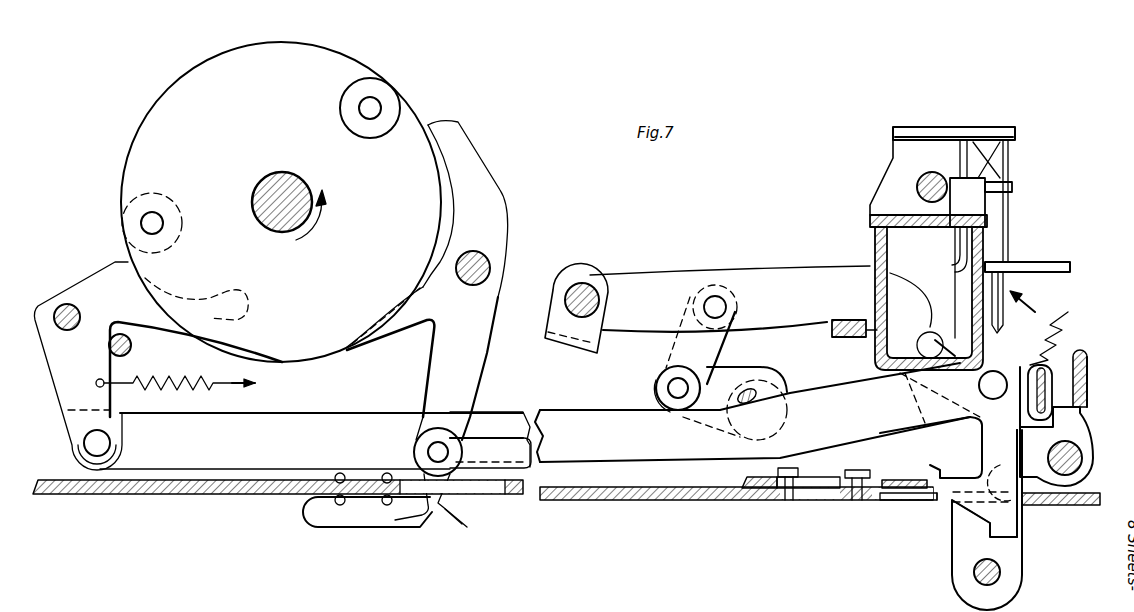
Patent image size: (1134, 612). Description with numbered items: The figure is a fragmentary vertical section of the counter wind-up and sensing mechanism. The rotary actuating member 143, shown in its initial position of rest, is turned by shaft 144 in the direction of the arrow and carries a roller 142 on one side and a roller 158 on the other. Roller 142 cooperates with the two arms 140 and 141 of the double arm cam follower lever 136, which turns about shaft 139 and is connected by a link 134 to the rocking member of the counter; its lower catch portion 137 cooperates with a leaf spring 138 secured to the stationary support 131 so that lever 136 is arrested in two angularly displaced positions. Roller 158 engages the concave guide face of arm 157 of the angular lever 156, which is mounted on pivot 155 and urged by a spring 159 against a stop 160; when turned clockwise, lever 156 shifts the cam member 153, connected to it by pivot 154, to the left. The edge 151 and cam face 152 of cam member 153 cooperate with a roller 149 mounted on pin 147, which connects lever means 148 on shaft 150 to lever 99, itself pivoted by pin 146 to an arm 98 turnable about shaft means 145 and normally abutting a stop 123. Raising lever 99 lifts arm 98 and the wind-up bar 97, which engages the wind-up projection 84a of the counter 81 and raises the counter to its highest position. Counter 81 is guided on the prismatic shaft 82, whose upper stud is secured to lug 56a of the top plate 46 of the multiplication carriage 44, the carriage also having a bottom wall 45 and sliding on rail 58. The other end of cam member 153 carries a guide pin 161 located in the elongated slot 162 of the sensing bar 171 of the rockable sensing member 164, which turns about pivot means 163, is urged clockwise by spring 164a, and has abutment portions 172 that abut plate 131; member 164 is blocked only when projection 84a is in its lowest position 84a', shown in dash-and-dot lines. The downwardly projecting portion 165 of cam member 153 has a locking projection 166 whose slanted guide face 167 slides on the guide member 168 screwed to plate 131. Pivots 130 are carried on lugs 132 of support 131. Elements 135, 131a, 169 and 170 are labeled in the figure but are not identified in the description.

The rotary actuating member 143 is at (182, 105).
The shaft 144 is at (282, 184).
The roller 142 is at (385, 93).
The roller 158 is at (122, 222).
The arm 141 is at (484, 178).
The double arm cam follower lever 136 is at (489, 299).
The shaft 139 is at (490, 265).
The arm 140 is at (387, 328).
The lever lower arm 135 is at (447, 412).
The link 134 is at (505, 470).
The catch portion 137 is at (392, 520).
The leaf spring 138 is at (452, 528).
The angular lever 156 is at (65, 374).
The pivot 155 is at (68, 305).
The pivot 154 is at (88, 437).
The arm 157 is at (196, 330).
The stop 160 is at (127, 350).
The spring 159 is at (168, 390).
The stationary support 131 is at (655, 502).
The base bar portion 131a is at (890, 501).
The cam member 153 is at (503, 422).
The edge 151 is at (560, 420).
The shaft means 145 is at (584, 282).
The stop 123 is at (760, 270).
The arm 98 is at (838, 276).
The pin 146 is at (714, 295).
The lever 99 is at (685, 350).
The pin 147 is at (656, 384).
The roller 149 is at (672, 389).
The lever means 148 is at (728, 377).
The shaft 150 is at (753, 390).
The cam face 152 is at (724, 437).
The bottom wall 45 is at (866, 362).
The elongated slot 162 is at (930, 325).
The multiplication carriage 44 is at (871, 186).
The top plate 46 is at (912, 228).
The rail 58 is at (915, 178).
The lug 56a is at (953, 133).
The prismatic shaft 82 is at (1005, 158).
The counter 81 is at (1020, 220).
The projecting portion 84a is at (1037, 241).
The spring 164a is at (1042, 290).
The lowest position of wind-up projection 84a' is at (1067, 336).
The slot 170 is at (1034, 362).
The sensing member 164 is at (1088, 376).
The sensing bar 171 is at (1089, 393).
The wind-up bar 97 is at (1075, 426).
The pivot means 163 is at (1082, 456).
The downwardly projecting portion 165 is at (1000, 432).
The guide pin 161 is at (943, 432).
The lug 132 is at (1012, 556).
The abutment portion 172 is at (1024, 514).
The pivot 130 is at (1001, 572).
The guide member 168 is at (896, 481).
The screw 169 is at (790, 503).
The locking projection 166 is at (938, 500).
The slanted guide face 167 is at (970, 503).